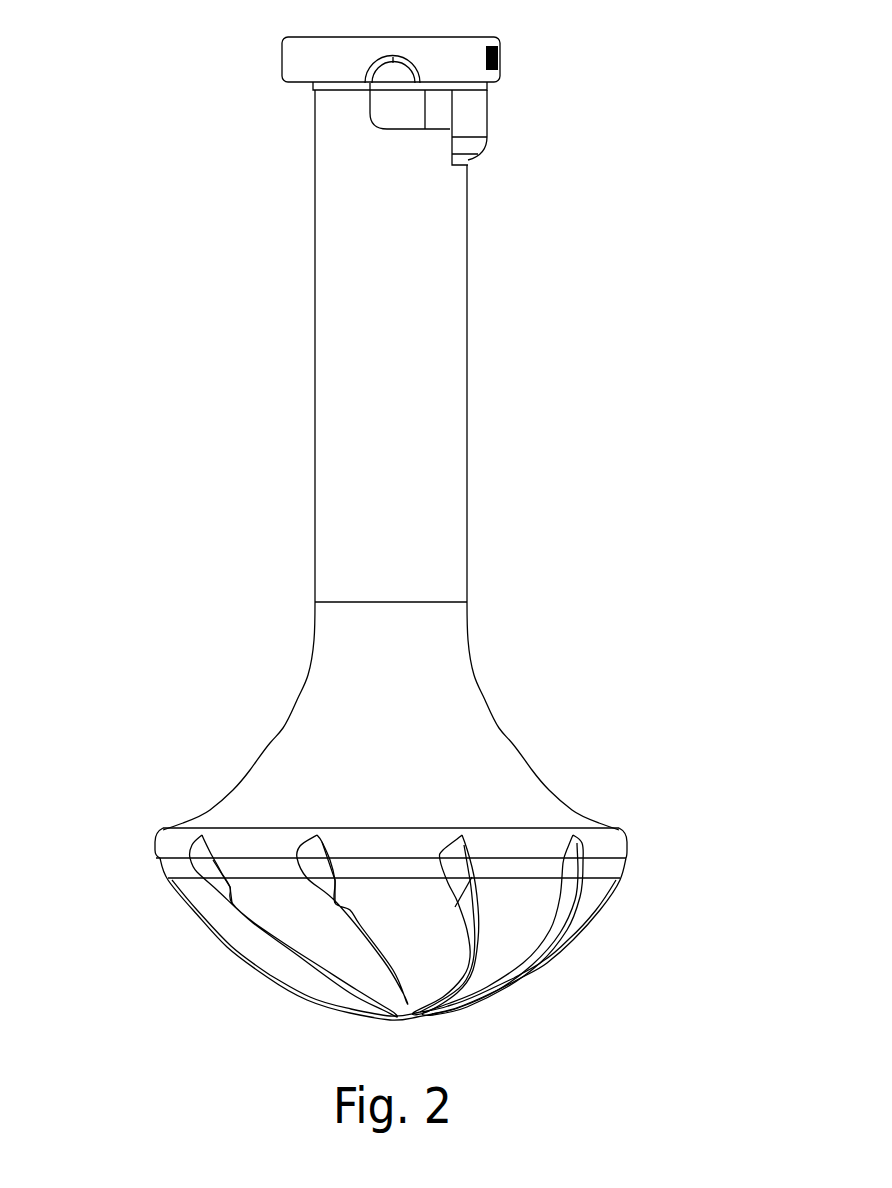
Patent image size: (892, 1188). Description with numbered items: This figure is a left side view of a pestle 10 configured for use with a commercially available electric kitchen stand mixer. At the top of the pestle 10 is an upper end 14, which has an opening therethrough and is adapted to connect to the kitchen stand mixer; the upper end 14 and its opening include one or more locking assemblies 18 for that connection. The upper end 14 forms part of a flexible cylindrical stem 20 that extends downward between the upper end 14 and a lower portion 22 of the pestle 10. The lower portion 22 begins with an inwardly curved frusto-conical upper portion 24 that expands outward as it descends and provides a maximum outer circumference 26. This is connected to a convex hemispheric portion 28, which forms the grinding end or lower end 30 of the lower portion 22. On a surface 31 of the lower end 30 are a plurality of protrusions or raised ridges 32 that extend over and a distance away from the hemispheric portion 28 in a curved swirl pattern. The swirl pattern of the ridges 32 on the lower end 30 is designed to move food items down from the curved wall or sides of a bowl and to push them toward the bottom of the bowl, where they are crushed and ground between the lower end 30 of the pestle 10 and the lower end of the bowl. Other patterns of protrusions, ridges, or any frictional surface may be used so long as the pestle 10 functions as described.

The pestle 10 is at (160, 205).
The upper end 14 is at (498, 70).
The locking assembly 18 is at (477, 123).
The flexible cylindrical stem 20 is at (460, 298).
The lower portion 22 is at (493, 735).
The frusto-conical upper portion 24 is at (247, 788).
The maximum outer circumference 26 is at (627, 843).
The convex hemispheric portion 28 is at (573, 920).
The lower end 30 is at (275, 965).
The surface 31 is at (423, 946).
The raised ridges 32 is at (233, 913).